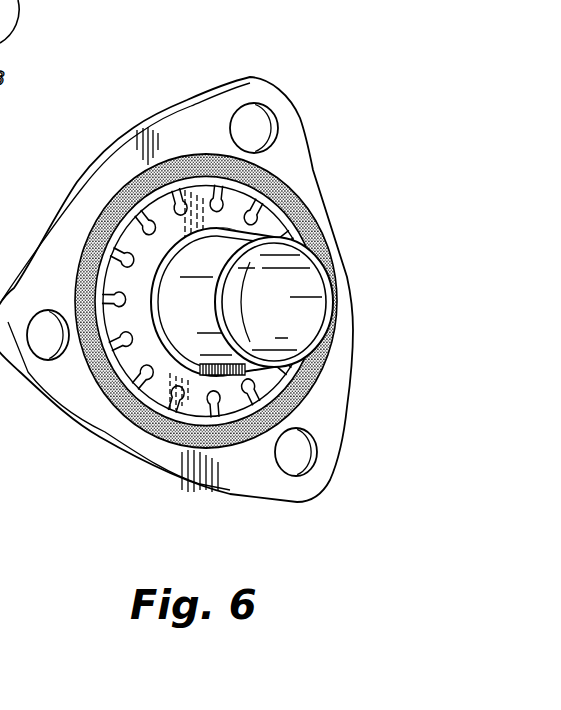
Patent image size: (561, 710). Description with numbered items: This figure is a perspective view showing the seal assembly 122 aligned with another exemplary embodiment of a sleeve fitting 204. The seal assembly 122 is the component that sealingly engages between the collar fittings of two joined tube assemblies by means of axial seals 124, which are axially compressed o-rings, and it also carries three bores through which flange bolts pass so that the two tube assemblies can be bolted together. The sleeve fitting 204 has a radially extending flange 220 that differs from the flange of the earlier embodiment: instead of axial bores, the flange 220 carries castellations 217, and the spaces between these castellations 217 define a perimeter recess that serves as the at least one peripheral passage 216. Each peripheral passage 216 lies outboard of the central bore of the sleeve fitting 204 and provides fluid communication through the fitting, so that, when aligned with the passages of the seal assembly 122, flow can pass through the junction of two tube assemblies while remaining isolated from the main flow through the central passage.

The seal assembly 122 is at (287, 90).
The axial seals 124 is at (107, 210).
The peripheral passage 216 is at (218, 184).
The castellations 217 is at (262, 190).
The sleeve fitting 204 is at (198, 381).
The radially extending flange 220 is at (232, 386).